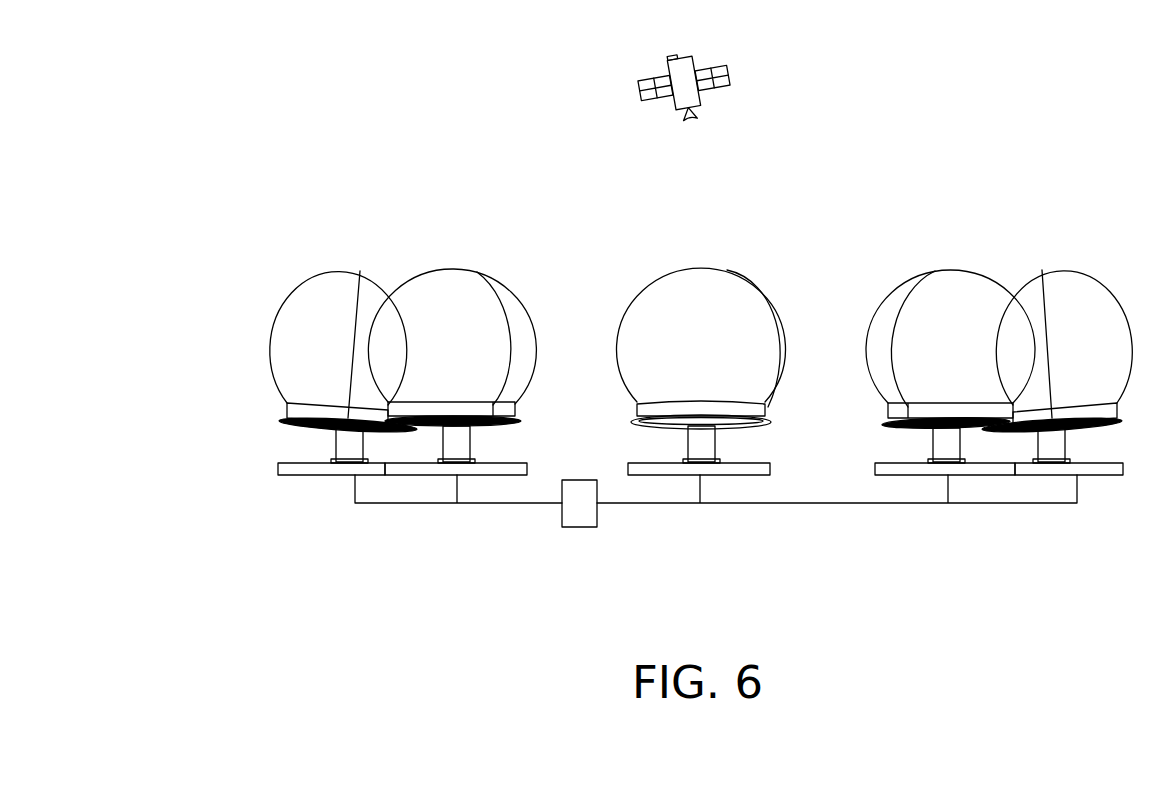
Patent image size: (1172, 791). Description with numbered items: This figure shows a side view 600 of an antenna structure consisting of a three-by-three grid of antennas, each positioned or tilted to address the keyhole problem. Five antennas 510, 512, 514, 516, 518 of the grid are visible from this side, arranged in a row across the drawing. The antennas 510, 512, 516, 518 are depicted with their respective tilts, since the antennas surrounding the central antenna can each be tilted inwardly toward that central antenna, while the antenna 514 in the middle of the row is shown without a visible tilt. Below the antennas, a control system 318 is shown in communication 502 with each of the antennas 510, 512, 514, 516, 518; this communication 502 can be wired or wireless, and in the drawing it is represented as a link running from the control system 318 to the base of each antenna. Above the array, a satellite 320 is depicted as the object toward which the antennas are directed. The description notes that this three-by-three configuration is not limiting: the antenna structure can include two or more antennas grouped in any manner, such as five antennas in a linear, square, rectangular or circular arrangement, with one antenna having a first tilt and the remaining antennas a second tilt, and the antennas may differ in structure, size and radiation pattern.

The side view 600 is at (208, 163).
The satellite 320 is at (717, 63).
The antenna 518 is at (370, 265).
The antenna 516 is at (492, 276).
The antenna 514 is at (720, 268).
The antenna 512 is at (948, 267).
The antenna 510 is at (1087, 273).
The communication 502 is at (872, 505).
The control system 318 is at (578, 527).